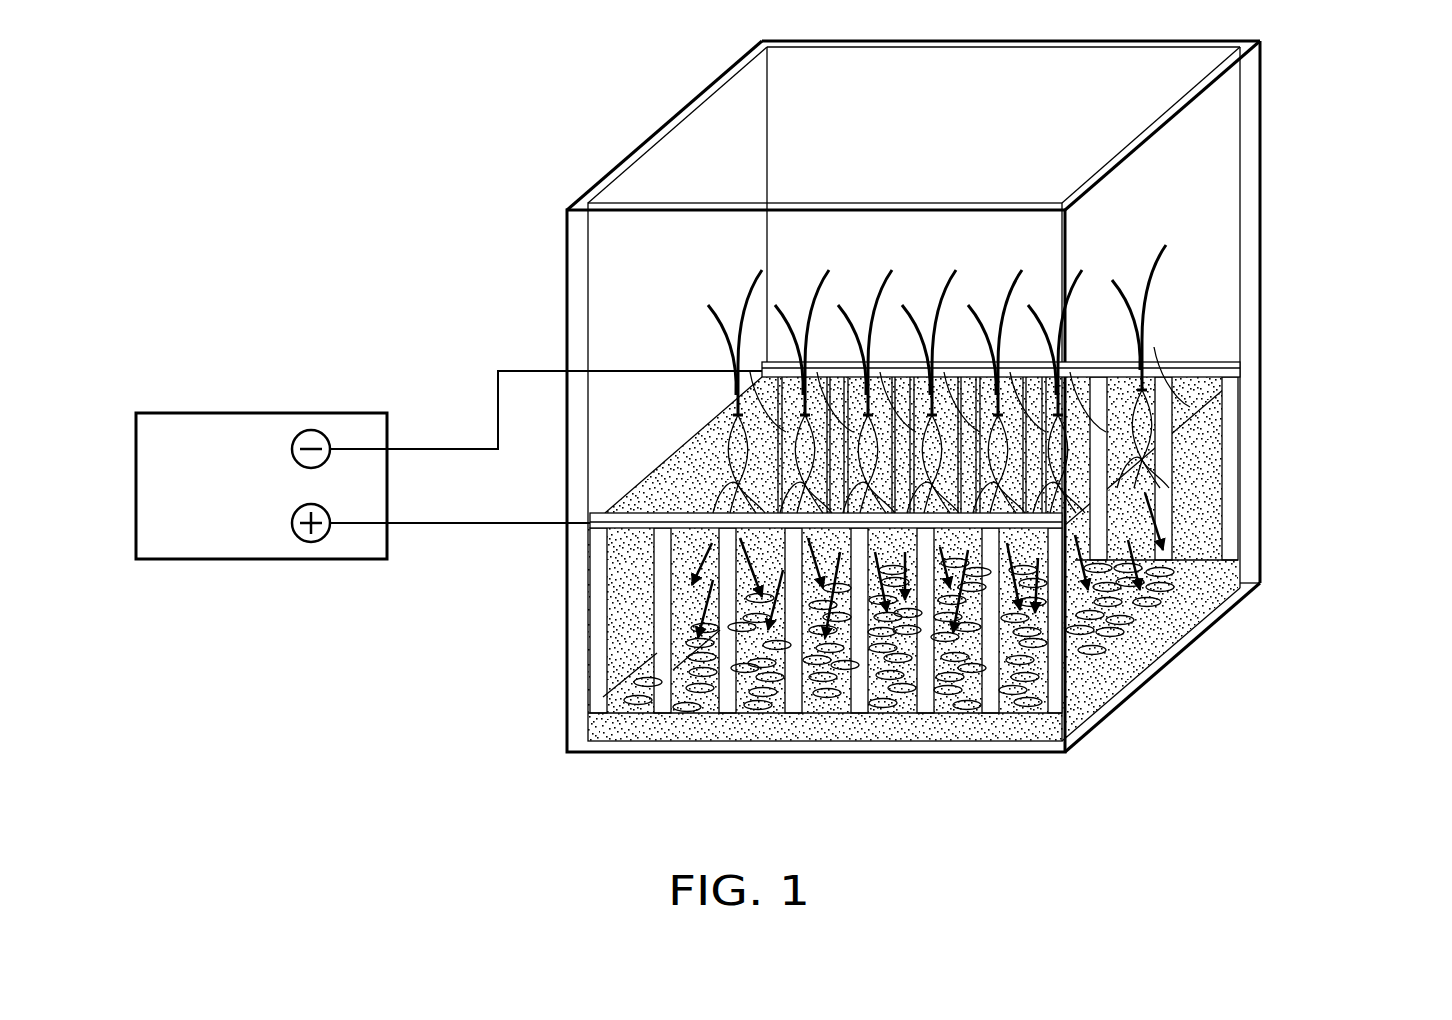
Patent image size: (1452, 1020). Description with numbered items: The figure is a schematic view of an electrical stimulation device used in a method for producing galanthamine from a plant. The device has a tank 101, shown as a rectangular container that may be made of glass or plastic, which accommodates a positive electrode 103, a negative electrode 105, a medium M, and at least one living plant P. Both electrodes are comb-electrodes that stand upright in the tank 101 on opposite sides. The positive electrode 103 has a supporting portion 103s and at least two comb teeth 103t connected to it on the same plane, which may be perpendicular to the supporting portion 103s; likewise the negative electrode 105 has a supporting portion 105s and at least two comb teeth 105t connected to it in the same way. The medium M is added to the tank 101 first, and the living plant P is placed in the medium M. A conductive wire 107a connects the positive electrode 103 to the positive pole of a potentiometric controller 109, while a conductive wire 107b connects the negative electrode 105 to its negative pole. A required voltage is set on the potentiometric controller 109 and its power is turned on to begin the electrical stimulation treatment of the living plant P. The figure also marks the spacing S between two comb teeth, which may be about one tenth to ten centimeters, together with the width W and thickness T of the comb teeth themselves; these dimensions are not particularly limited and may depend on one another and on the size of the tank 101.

The tank 101 is at (603, 283).
The positive electrode 103 is at (723, 658).
The supporting portion 103s is at (625, 527).
The comb teeth 103t is at (595, 640).
The negative electrode 105 is at (1098, 390).
The supporting portion 105s is at (1230, 363).
The comb teeth 105t is at (900, 400).
The conductive wire 107a is at (440, 530).
The conductive wire 107b is at (437, 447).
The potentiometric controller 109 is at (232, 503).
The living plant P is at (730, 445).
The medium M is at (1203, 512).
The spacing S is at (1222, 375).
The width W is at (932, 745).
The thickness T is at (673, 745).